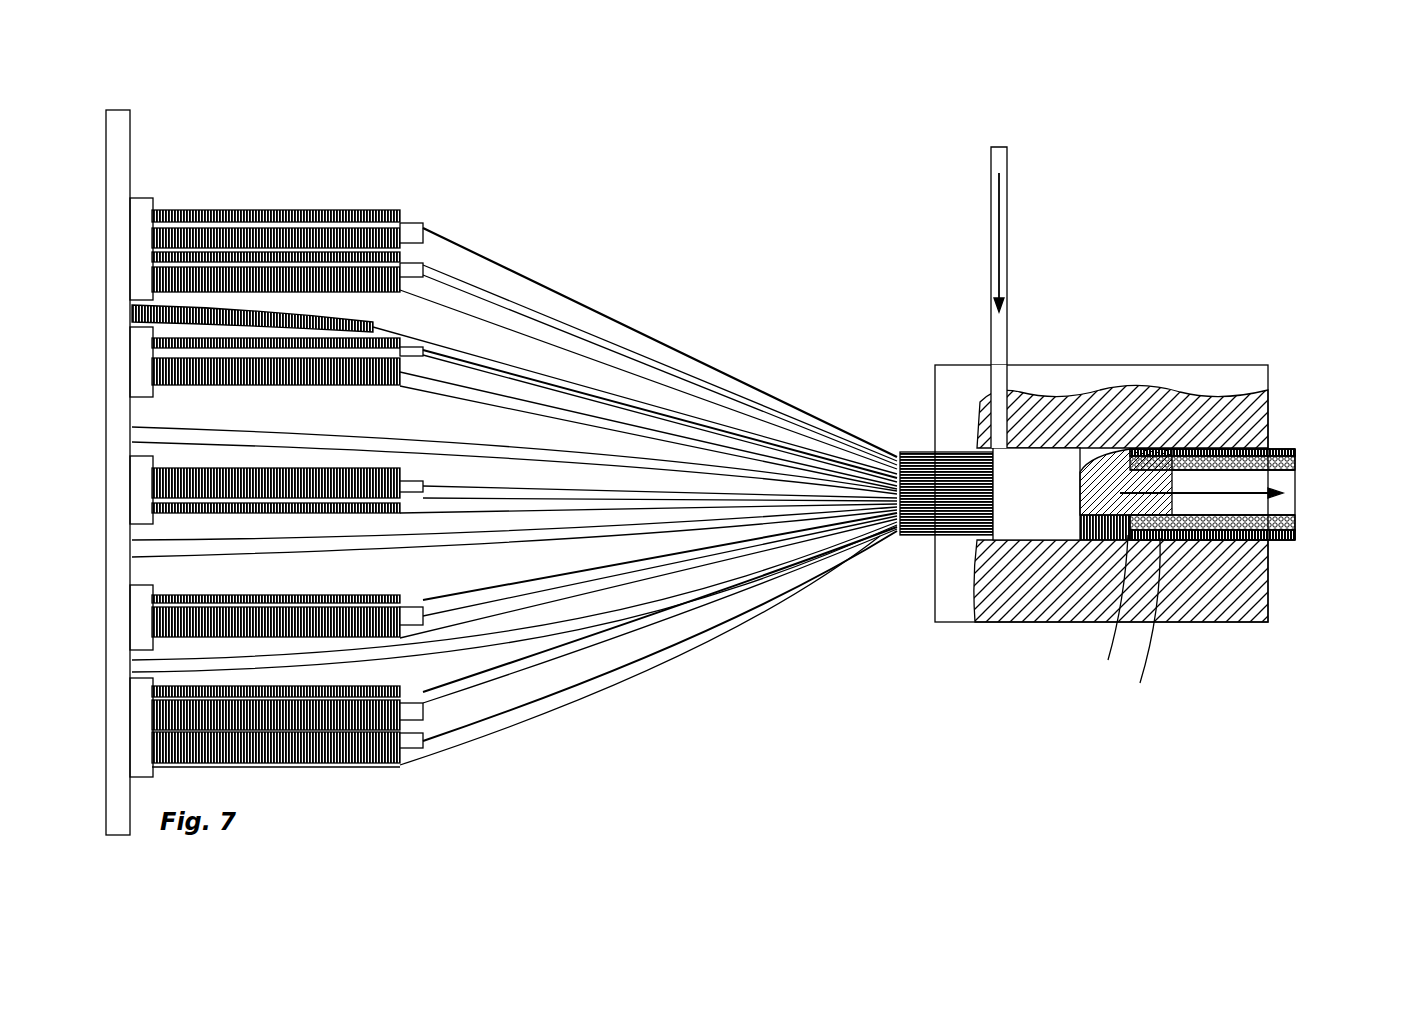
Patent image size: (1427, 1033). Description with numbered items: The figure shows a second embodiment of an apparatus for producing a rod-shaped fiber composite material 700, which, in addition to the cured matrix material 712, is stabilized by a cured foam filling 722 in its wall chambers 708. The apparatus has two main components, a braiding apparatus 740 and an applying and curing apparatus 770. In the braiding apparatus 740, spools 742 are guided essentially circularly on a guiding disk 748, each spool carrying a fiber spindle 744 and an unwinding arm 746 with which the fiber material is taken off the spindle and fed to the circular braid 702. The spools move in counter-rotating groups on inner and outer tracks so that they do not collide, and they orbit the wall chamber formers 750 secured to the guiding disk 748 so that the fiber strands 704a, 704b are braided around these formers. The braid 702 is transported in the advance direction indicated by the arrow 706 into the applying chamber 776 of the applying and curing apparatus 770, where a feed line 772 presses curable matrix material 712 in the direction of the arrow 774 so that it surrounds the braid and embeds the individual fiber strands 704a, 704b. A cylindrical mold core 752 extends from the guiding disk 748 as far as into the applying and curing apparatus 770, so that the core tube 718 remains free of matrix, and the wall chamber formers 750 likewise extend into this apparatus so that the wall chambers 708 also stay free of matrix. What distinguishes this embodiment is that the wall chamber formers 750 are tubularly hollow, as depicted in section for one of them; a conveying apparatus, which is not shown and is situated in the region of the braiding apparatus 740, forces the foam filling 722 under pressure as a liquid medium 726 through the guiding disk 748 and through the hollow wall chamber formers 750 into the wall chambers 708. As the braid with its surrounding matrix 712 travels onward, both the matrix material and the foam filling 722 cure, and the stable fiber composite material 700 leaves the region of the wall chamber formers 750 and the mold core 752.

The fiber composite material 700 is at (1284, 552).
The circular braid 702 is at (915, 450).
The fiber strand 704a is at (1290, 452).
The fiber strand 704b is at (1297, 468).
The advance direction arrow 706 is at (1270, 408).
The wall chambers 708 is at (1298, 460).
The matrix material 712 is at (1297, 541).
The core tube 718 is at (1198, 505).
The foam filling 722 is at (1218, 505).
The liquid medium 726 is at (183, 313).
The braiding apparatus 740 is at (541, 250).
The spools 742 is at (356, 200).
The fiber spindle 744 is at (400, 208).
The unwinding arm 746 is at (380, 212).
The guiding disk 748 is at (120, 155).
The wall chamber formers 750 is at (432, 292).
The mold core 752 is at (528, 485).
The applying and curing apparatus 770 is at (900, 250).
The feed line 772 is at (1003, 335).
The matrix feed direction arrow 774 is at (1003, 272).
The applying chamber 776 is at (1027, 447).